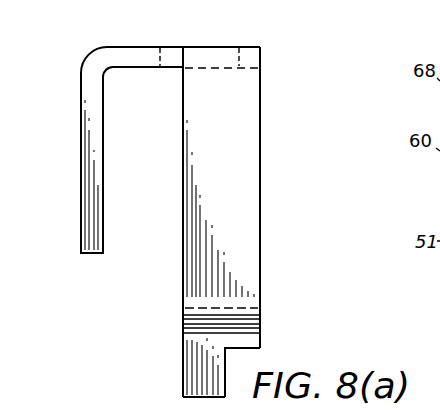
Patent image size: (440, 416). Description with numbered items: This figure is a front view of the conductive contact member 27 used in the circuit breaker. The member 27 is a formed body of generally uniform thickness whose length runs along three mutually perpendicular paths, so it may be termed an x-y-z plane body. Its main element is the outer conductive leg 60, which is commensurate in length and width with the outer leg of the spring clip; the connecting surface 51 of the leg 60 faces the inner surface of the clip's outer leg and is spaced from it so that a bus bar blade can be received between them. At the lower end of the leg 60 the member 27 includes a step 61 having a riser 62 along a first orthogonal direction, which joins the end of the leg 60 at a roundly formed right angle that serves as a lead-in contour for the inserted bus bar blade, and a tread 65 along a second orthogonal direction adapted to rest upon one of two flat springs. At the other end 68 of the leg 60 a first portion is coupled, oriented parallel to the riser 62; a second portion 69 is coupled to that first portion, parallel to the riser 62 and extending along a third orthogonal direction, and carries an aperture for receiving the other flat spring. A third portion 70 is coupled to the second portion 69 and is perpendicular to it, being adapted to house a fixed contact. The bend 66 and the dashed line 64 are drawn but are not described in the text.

The conductive contact member 27 is at (152, 176).
The connecting surface 51 is at (250, 190).
The outer conductive leg 60 is at (260, 130).
The step 61 is at (179, 337).
The riser 62 is at (262, 330).
The dashed line 64 is at (262, 300).
The tread 65 is at (185, 373).
The bend 66 is at (95, 42).
The other end of the leg 68 is at (260, 79).
The second portion 69 is at (133, 46).
The third portion 70 is at (82, 143).